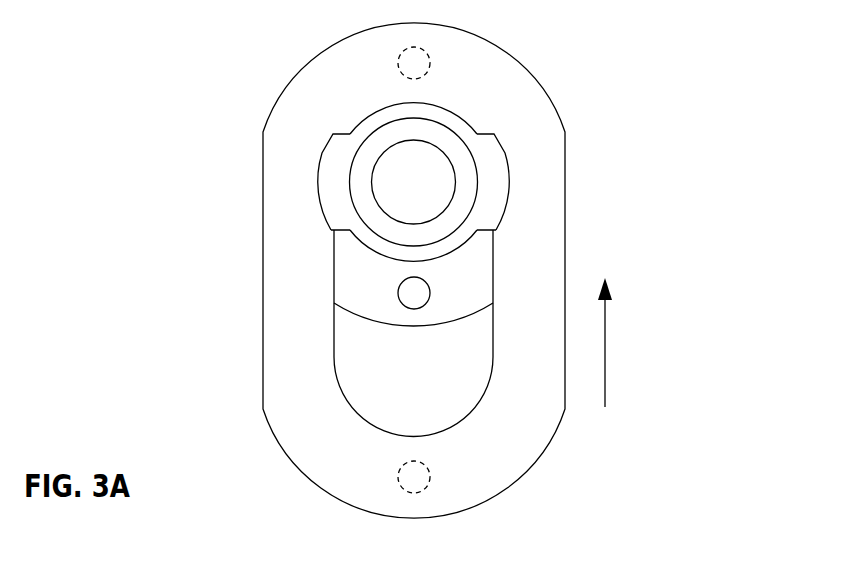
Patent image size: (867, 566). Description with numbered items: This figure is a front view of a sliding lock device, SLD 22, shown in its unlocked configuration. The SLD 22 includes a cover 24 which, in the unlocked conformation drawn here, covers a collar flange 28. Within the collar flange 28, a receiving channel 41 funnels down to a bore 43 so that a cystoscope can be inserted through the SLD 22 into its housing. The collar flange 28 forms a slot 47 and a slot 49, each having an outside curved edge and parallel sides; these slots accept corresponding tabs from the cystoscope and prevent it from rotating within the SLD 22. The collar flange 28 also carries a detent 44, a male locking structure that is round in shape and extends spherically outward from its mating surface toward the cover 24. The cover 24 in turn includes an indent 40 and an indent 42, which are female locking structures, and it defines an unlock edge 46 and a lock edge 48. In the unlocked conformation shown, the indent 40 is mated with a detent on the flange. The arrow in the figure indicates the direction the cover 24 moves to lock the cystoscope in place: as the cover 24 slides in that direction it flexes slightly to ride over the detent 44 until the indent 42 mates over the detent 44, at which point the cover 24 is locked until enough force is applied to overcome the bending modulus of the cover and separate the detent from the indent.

The SLD 22 is at (706, 96).
The cover 24 is at (553, 239).
The collar flange 28 is at (461, 307).
The indent 40 is at (398, 56).
The receiving channel 41 is at (467, 197).
The indent 42 is at (397, 477).
The bore 43 is at (430, 167).
The detent 44 is at (398, 295).
The unlock edge 46 is at (318, 183).
The slot 47 is at (332, 217).
The lock edge 48 is at (333, 347).
The slot 49 is at (487, 150).